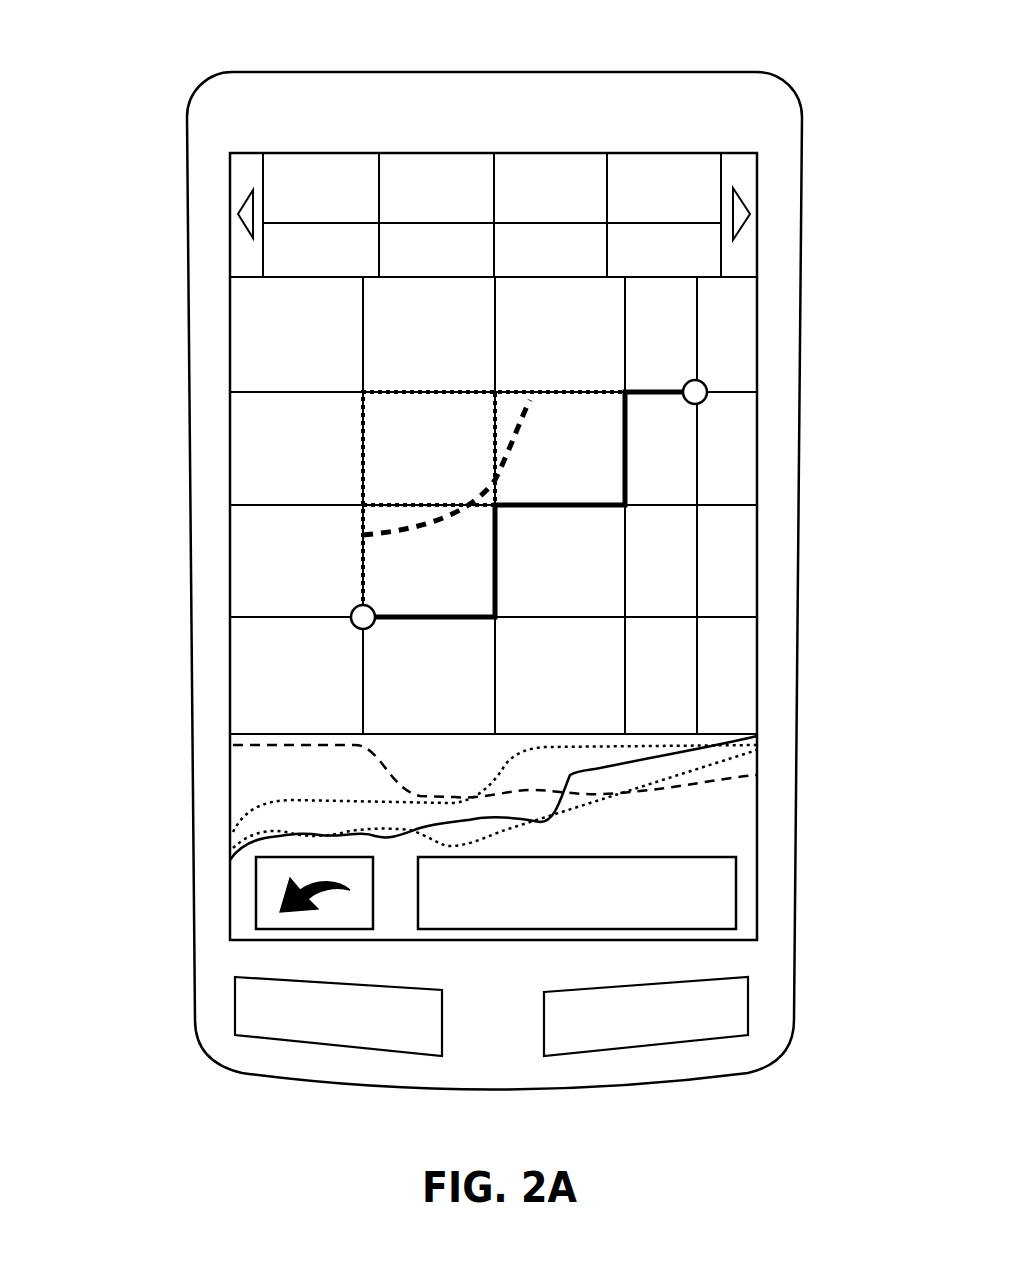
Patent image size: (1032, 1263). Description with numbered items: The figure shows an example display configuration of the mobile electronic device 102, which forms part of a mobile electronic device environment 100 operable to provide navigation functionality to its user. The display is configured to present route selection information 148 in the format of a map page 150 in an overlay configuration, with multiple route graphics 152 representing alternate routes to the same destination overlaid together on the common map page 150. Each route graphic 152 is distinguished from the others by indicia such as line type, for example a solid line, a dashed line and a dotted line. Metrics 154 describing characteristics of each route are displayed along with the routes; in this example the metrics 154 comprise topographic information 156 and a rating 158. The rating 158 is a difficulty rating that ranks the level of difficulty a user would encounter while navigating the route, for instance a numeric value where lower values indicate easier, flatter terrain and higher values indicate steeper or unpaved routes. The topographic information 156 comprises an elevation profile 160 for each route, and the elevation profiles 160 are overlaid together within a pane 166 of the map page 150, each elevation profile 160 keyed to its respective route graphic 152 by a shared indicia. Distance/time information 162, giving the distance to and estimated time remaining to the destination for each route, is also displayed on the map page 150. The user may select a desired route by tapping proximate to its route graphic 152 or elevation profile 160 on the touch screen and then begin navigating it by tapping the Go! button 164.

The mobile electronic device environment 100 is at (153, 72).
The mobile electronic device 102 is at (773, 72).
The route selection information 148 is at (735, 657).
The map page 150 is at (242, 470).
The route graphic 152 is at (363, 430).
The metrics 154 is at (512, 480).
The topographic information 156 is at (262, 780).
The rating 158 is at (493, 483).
The elevation profile 160 is at (250, 750).
The distance/time information 162 is at (460, 272).
The Go! button 164 is at (718, 892).
The pane 166 is at (757, 850).